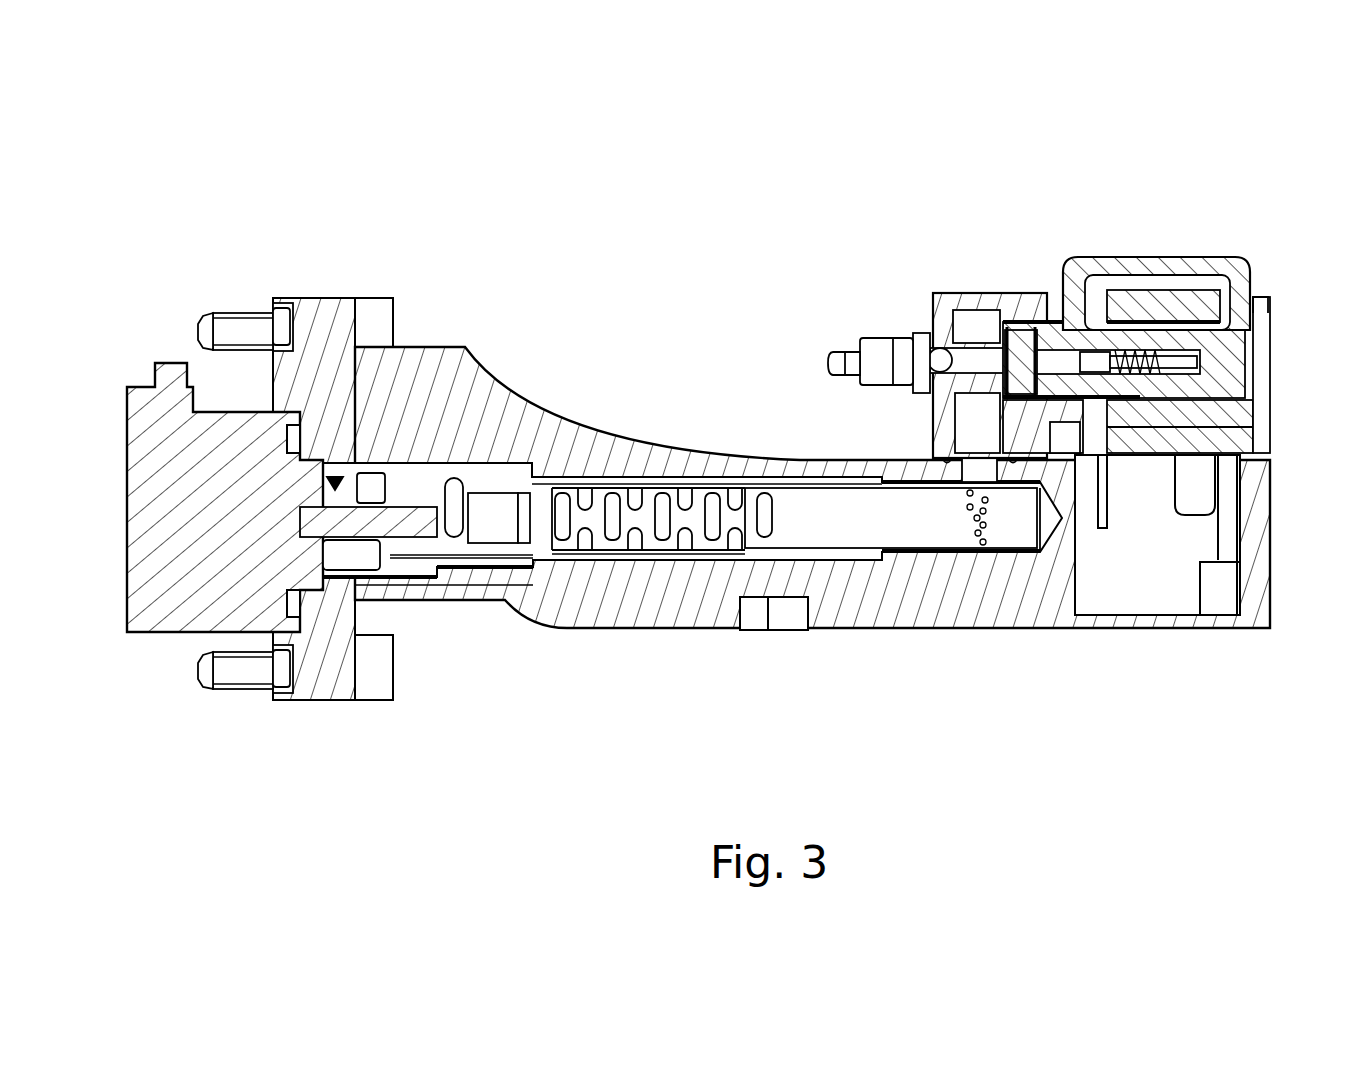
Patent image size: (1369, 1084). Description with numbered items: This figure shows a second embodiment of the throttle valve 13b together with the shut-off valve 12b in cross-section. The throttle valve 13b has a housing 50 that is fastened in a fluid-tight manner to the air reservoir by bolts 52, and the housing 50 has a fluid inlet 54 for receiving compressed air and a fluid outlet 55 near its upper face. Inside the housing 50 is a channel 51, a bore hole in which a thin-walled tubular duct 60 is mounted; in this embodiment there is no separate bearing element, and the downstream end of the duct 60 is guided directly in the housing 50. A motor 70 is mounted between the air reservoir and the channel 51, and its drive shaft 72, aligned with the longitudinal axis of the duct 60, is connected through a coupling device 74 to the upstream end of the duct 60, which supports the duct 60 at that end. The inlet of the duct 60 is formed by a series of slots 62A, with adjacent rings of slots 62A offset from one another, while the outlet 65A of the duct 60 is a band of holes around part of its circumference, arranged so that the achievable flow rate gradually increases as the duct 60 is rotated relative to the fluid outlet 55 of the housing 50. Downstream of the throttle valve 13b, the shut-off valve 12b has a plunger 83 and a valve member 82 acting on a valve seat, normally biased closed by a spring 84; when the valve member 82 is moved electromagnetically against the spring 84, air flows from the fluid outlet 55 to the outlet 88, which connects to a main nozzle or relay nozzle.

The throttle valve 13b is at (692, 275).
The shut-off valve 12b is at (1276, 282).
The housing 50 is at (483, 362).
The channel 51 is at (697, 486).
The bolts 52 is at (282, 318).
The fluid inlet 54 is at (418, 362).
The fluid outlet 55 is at (972, 478).
The tubular duct 60 is at (797, 486).
The slots 62A is at (617, 520).
The outlet of the duct 65A is at (968, 520).
The motor 70 is at (150, 425).
The drive shaft 72 is at (407, 525).
The coupling device 74 is at (452, 537).
The valve member 82 is at (1000, 345).
The plunger 83 is at (1067, 335).
The spring 84 is at (1165, 347).
The outlet 88 is at (843, 353).